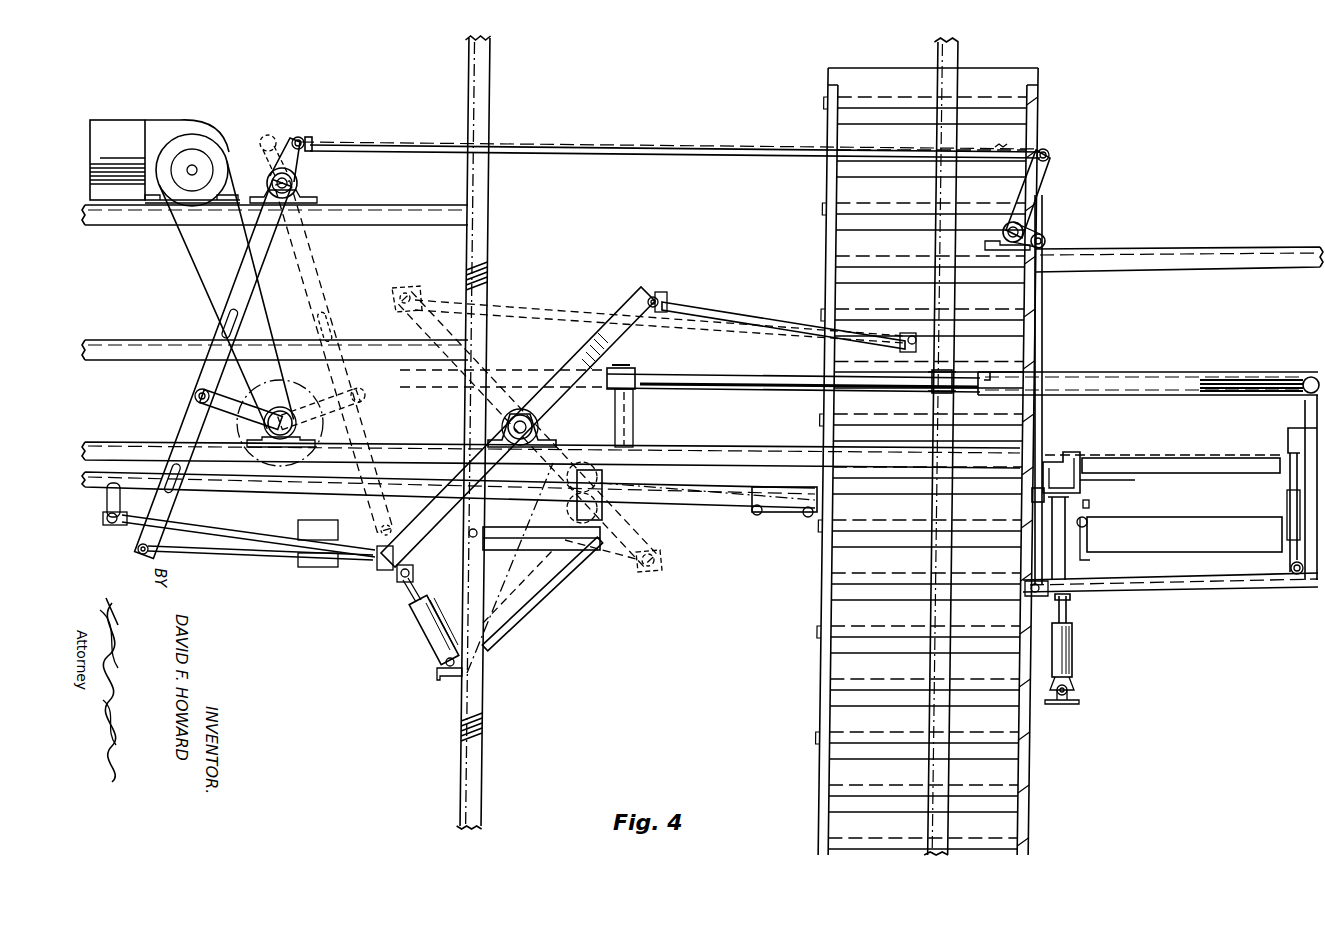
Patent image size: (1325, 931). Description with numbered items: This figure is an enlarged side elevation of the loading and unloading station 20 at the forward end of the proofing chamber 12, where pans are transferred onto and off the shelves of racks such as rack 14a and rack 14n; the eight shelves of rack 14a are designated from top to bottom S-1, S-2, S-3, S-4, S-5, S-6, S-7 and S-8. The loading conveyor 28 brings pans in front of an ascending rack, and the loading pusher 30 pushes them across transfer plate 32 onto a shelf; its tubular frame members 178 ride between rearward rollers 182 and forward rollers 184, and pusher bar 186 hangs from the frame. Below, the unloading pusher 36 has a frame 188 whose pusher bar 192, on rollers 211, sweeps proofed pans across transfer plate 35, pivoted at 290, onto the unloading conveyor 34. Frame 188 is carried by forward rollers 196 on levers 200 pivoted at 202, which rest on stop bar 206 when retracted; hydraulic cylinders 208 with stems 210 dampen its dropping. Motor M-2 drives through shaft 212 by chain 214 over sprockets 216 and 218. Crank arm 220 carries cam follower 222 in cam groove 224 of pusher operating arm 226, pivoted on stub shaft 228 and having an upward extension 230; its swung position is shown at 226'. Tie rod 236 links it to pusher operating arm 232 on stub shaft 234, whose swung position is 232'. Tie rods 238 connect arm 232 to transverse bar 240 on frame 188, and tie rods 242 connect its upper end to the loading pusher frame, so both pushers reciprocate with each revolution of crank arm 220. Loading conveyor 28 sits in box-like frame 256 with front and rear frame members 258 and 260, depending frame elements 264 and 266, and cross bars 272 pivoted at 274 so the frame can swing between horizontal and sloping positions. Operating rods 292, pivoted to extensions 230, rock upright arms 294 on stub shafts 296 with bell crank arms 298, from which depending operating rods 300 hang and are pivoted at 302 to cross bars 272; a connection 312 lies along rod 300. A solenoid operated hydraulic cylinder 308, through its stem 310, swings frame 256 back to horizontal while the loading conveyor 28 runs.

The proofing chamber 12 is at (656, 208).
The rack 14a is at (827, 247).
The rack 14n is at (823, 611).
The loading and unloading station 20 is at (1182, 419).
The loading conveyor 28 is at (1206, 460).
The loading pusher 30 is at (1296, 430).
The transfer plate 32 is at (1062, 456).
The unloading conveyor 34 is at (1211, 517).
The transfer plate 35 is at (1075, 515).
The unloading pusher 36 is at (781, 514).
The tubular frame members 178 is at (726, 371).
The rearward concave rollers 182 is at (628, 382).
The forward concave rollers 184 is at (925, 383).
The pusher bar 186 is at (1292, 446).
The rectangular frame 188 is at (668, 503).
The pusher bar 192 is at (812, 493).
The forward rollers 196 is at (594, 508).
The levers 200 is at (566, 541).
The pivotal mounting 202 is at (470, 535).
The stop bar 206 is at (498, 621).
The hydraulic cylinders 208 is at (426, 616).
The stems 210 is at (400, 579).
The rollers 211 is at (755, 514).
The through shaft 212 is at (292, 418).
The chain 214 is at (281, 311).
The sprocket 216 is at (212, 160).
The sprocket 218 is at (290, 416).
The crank arm 220 is at (277, 417).
The cam follower 222 is at (196, 397).
The cam groove 224 is at (190, 421).
The pusher operating arm 226 is at (248, 527).
The broken line position of pusher operating arm 226' is at (333, 358).
The stub shaft 228 is at (298, 184).
The extension 230 is at (306, 163).
The pusher operating arm 232 is at (522, 425).
The broken line position of pusher operating arm 232' is at (527, 405).
The stub shaft 234 is at (520, 410).
The tie rod 236 is at (262, 562).
The tie rod 238 is at (268, 535).
The transverse bar 240 is at (109, 523).
The tie rod 242 is at (743, 299).
The box-like frame 256 is at (1200, 593).
The front frame member 258 is at (1292, 474).
The rear frame member 260 is at (1085, 490).
The depending frame elements 264 is at (1310, 581).
The depending frame elements 266 is at (1066, 571).
The cross bars 272 is at (1135, 591).
The pivotal connection 274 is at (1290, 573).
The pivotal connection 290 is at (1089, 521).
The operating rods 292 is at (604, 146).
The upright arm 294 is at (1050, 176).
The stub shaft 296 is at (1025, 229).
The bell crank arm 298 is at (1046, 237).
The operating rod 300 is at (1043, 333).
The pivotal connection 302 is at (1025, 591).
The solenoid operated hydraulic cylinder 308 is at (1073, 651).
The piston rod 310 is at (1067, 613).
The block 312 is at (1032, 492).
The shelf S-1 is at (1040, 97).
The shelf S-2 is at (1045, 149).
The shelf S-3 is at (1036, 206).
The shelf S-4 is at (1040, 251).
The shelf S-5 is at (1034, 311).
The shelf S-6 is at (1036, 366).
The shelf S-7 is at (1036, 416).
The shelf S-8 is at (1012, 471).
The gear head reduction motor M-2 is at (159, 160).